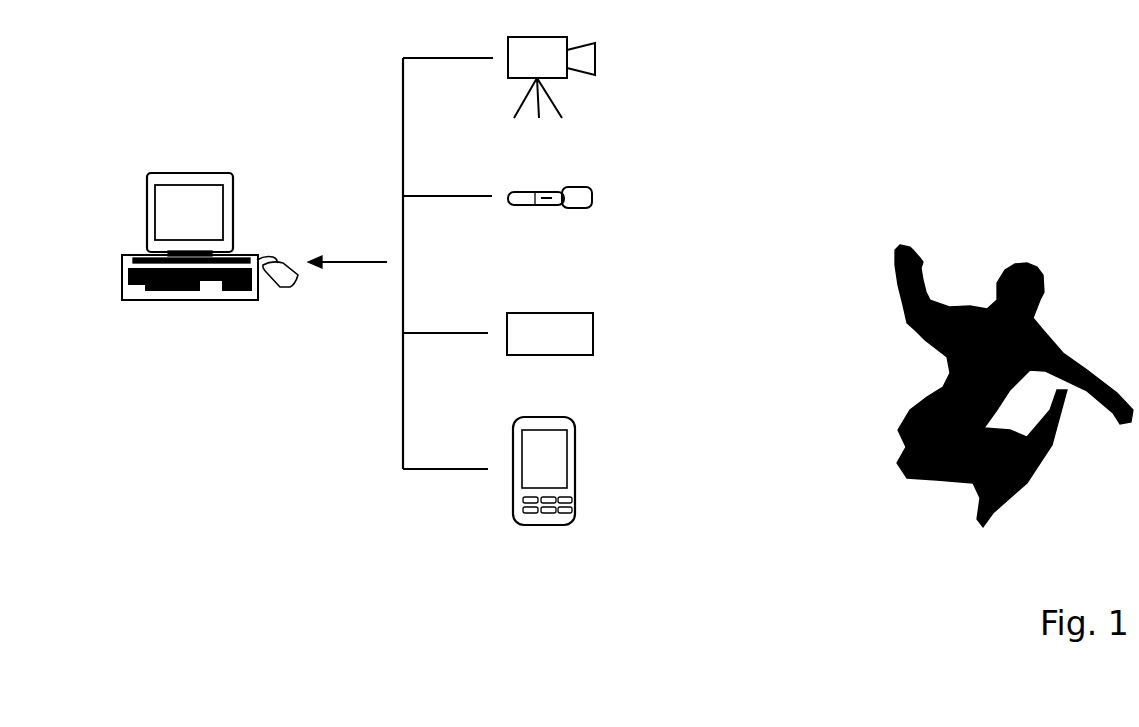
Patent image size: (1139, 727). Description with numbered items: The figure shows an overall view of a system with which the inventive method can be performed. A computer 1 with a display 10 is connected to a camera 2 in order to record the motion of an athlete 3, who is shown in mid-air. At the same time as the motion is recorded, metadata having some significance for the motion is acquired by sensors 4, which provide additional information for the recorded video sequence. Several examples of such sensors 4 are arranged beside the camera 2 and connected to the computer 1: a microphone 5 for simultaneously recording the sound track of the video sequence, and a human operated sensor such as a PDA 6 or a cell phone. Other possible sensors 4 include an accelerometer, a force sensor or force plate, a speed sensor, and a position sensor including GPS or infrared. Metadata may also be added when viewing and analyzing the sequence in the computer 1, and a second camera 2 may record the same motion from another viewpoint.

The computer 1 is at (182, 300).
The display 10 is at (200, 200).
The camera 2 is at (595, 50).
The athlete 3 is at (592, 194).
The sensor 4 is at (593, 335).
The microphone 5 is at (578, 471).
The PDA 6 is at (907, 323).